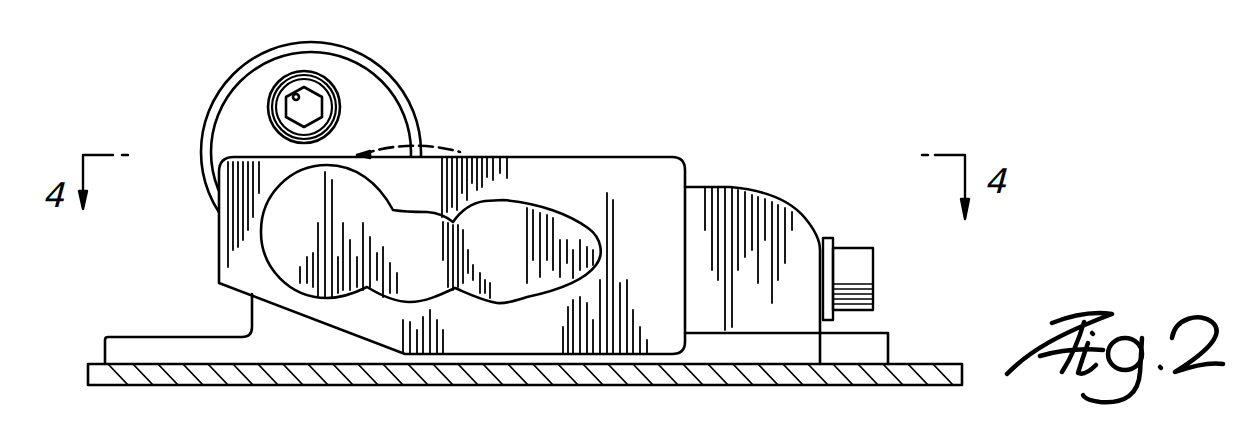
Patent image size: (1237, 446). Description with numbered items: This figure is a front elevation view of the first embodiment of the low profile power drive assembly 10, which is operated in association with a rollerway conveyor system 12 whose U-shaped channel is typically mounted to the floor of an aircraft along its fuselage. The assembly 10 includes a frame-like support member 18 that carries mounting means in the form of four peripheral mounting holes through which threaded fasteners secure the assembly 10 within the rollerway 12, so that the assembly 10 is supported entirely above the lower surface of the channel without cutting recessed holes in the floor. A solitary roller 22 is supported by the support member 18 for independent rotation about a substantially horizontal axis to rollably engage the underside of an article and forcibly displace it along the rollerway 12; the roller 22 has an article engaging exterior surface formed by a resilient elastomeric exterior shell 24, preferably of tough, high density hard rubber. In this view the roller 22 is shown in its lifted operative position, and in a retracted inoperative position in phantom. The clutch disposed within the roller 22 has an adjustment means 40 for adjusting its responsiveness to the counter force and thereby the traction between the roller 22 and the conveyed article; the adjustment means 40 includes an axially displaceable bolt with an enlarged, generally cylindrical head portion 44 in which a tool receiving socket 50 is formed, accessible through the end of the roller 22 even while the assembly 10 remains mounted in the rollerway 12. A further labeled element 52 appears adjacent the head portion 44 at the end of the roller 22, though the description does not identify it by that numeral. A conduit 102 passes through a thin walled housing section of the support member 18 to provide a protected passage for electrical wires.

The low profile power drive assembly 10 is at (692, 140).
The rollerway conveyor system 12 is at (942, 360).
The support member 18 is at (270, 342).
The roller 22 is at (369, 67).
The resilient elastomeric exterior shell 24 is at (410, 113).
The adjustment means 40 is at (262, 110).
The enlarged head portion 44 is at (287, 126).
The tool receiving socket 50 is at (293, 96).
The bolt 52 is at (274, 98).
The conduit 102 is at (853, 260).